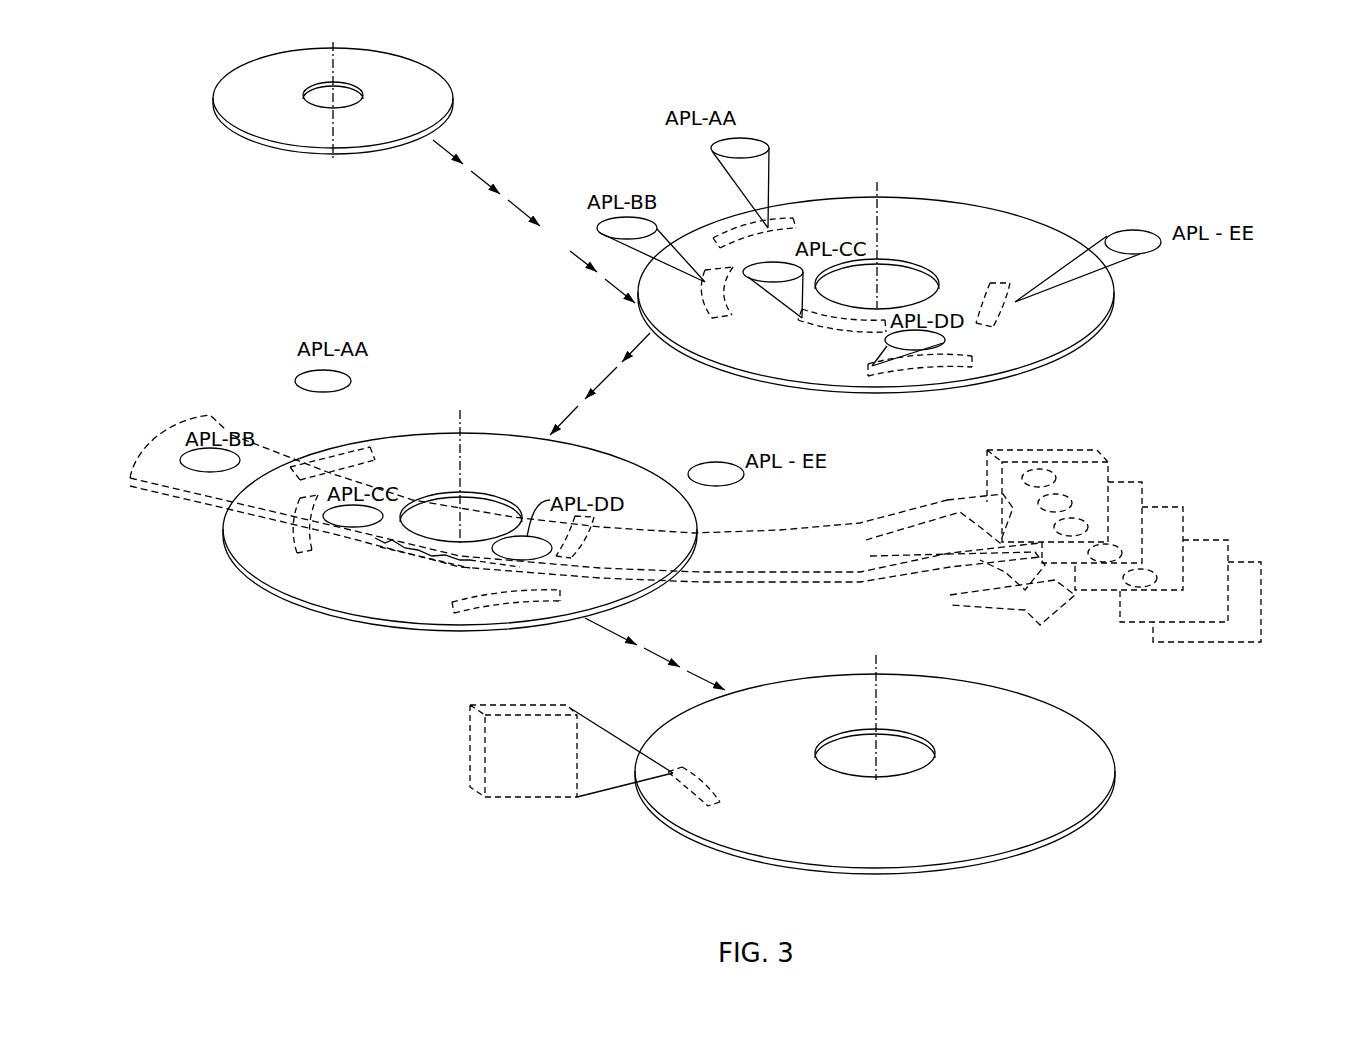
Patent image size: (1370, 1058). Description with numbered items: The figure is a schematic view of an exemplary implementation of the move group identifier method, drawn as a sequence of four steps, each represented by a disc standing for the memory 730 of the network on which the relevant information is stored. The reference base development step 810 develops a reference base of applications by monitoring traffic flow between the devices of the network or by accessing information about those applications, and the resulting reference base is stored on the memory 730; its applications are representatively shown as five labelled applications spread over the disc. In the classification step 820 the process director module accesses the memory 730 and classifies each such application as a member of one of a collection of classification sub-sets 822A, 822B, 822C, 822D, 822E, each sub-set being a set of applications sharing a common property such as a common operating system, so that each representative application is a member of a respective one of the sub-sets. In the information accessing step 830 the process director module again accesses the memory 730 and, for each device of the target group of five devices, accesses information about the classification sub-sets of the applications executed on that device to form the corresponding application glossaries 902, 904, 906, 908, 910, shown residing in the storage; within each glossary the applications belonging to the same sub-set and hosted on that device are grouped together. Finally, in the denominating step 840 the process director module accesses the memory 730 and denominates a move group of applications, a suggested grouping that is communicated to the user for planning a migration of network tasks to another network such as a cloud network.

The memory 730 is at (428, 70).
The reference base development step 810 is at (140, 150).
The classification step 820 is at (1220, 322).
The information accessing step 830 is at (225, 626).
The denominating step 840 is at (1240, 784).
The classification sub-set 822A is at (793, 219).
The classification sub-set 822B is at (719, 307).
The classification sub-set 822C is at (872, 327).
The classification sub-set 822D is at (972, 358).
The classification sub-set 822E is at (992, 282).
The application glossary 902 is at (1078, 450).
The application glossary 904 is at (1140, 482).
The application glossary 906 is at (1182, 507).
The application glossary 908 is at (1225, 540).
The application glossary 910 is at (1262, 586).